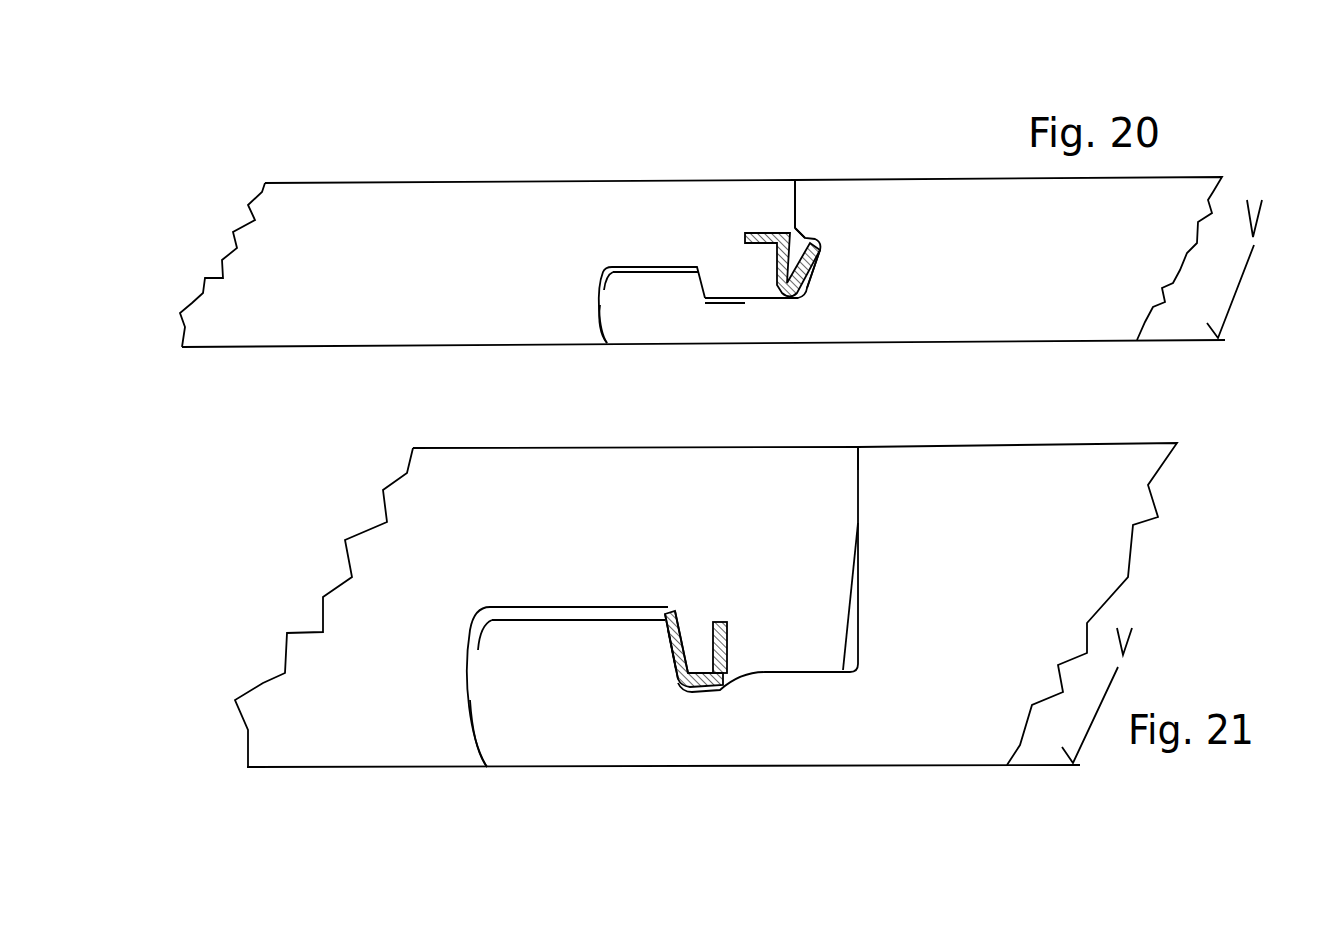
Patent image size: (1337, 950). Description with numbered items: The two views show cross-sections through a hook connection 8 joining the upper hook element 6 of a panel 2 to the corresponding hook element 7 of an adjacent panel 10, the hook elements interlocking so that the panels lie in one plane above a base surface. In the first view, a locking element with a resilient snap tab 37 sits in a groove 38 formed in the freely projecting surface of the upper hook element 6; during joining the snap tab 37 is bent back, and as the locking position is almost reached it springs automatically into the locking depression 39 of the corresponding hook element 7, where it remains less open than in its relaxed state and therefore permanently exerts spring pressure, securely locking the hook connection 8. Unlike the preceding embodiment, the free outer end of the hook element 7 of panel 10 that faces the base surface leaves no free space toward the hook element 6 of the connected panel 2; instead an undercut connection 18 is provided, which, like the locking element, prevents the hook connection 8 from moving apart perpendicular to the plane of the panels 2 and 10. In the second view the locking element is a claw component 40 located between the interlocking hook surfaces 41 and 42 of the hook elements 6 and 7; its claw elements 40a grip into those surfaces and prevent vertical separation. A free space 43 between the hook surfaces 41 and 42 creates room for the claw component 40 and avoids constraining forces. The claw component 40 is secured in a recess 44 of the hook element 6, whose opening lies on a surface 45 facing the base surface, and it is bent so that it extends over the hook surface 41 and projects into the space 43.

In FIG. 20, the panel 2 is at (340, 258).
In FIG. 21, the panel 2 is at (365, 711).
In FIG. 20, the upper hook element 6 is at (635, 249).
In FIG. 21, the upper hook element 6 is at (662, 497).
In FIG. 20, the corresponding hook element 7 is at (697, 340).
In FIG. 21, the corresponding hook element 7 is at (618, 752).
In FIG. 20, the hook connection 8 is at (770, 143).
In FIG. 21, the hook connection 8 is at (814, 440).
In FIG. 20, the panel 10 is at (1080, 265).
In FIG. 21, the panel 10 is at (1042, 513).
In FIG. 20, the undercut connection 18 is at (608, 347).
In FIG. 21, the undercut connection 18 is at (482, 767).
In FIG. 20, the resilient snap tab 37 is at (800, 247).
In FIG. 20, the groove 38 is at (745, 237).
In FIG. 20, the locking depression 39 is at (810, 267).
In FIG. 21, the claw component 40 is at (670, 614).
In FIG. 21, the claw elements 40a is at (670, 640).
In FIG. 21, the hook surface 41 is at (670, 647).
In FIG. 21, the hook surface 42 is at (677, 640).
In FIG. 21, the free space 43 is at (678, 682).
In FIG. 21, the recess 44 is at (724, 643).
In FIG. 21, the surface 45 is at (812, 676).